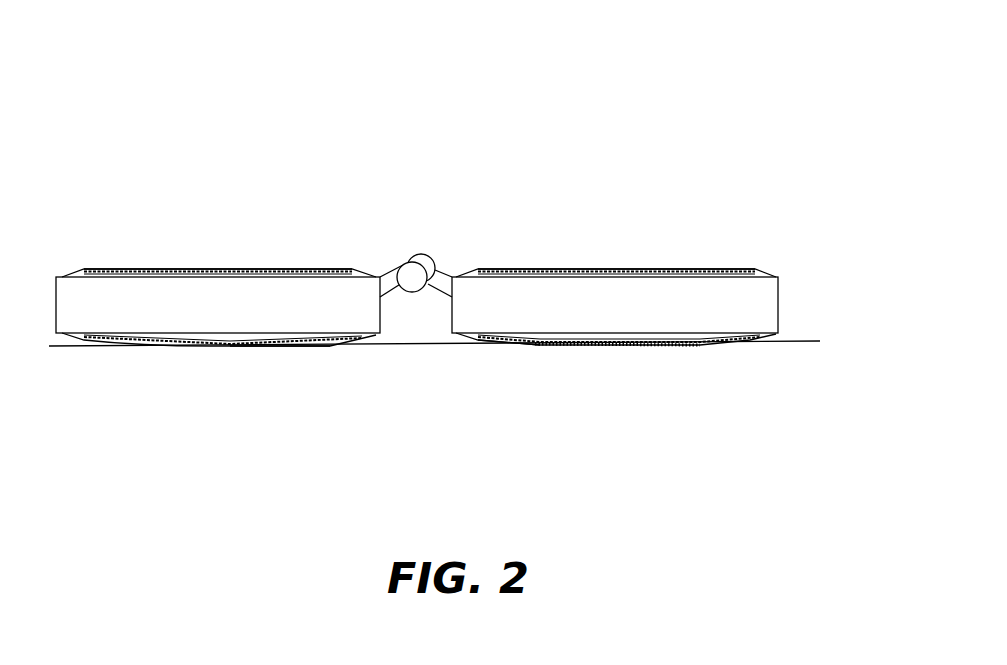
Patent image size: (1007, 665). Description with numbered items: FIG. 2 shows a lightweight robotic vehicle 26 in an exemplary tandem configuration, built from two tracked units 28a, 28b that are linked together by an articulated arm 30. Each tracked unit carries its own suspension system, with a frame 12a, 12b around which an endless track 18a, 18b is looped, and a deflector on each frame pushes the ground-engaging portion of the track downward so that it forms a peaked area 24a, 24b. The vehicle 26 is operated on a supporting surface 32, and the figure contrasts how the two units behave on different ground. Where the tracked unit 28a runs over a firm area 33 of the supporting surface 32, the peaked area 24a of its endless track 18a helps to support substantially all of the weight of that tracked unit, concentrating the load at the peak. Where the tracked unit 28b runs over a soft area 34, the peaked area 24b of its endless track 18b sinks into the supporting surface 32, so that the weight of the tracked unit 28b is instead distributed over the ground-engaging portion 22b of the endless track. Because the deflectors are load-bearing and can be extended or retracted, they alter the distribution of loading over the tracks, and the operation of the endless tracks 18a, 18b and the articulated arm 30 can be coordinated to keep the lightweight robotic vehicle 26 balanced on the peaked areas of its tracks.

The lightweight robotic vehicle 26 is at (133, 54).
The frame 12a is at (178, 305).
The frame 12b is at (736, 305).
The endless track 18a is at (273, 265).
The endless track 18b is at (744, 270).
The tracked unit 28a is at (210, 297).
The tracked unit 28b is at (617, 297).
The peaked area 24a is at (217, 348).
The peaked area 24b is at (603, 338).
The ground-engaging portion 22b is at (702, 347).
The articulated arm 30 is at (423, 266).
The supporting surface 32 is at (70, 348).
The firm area 33 is at (287, 362).
The soft area 34 is at (512, 362).